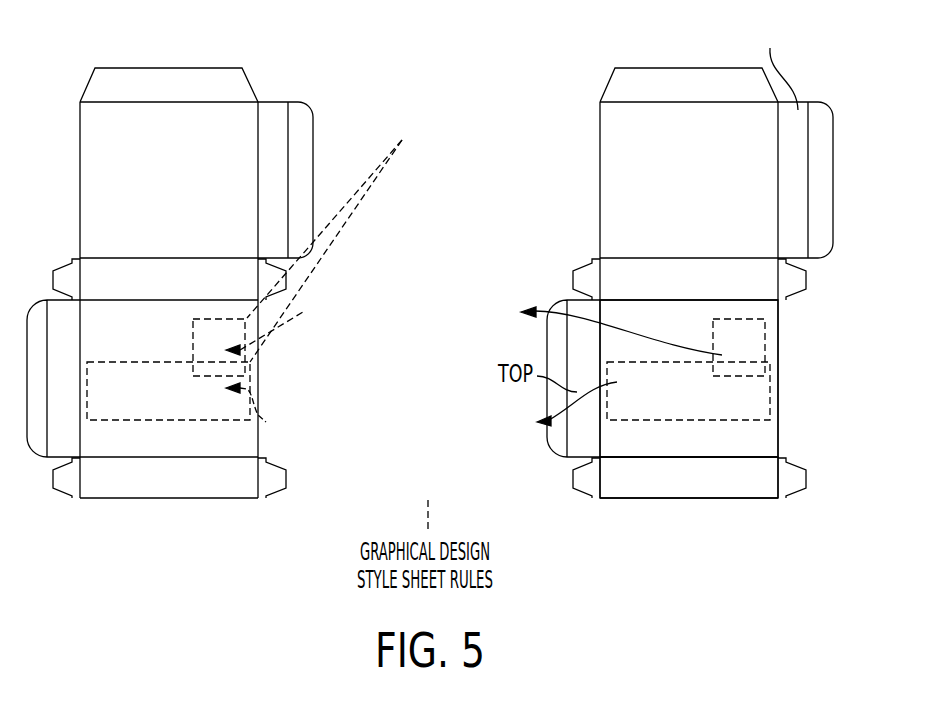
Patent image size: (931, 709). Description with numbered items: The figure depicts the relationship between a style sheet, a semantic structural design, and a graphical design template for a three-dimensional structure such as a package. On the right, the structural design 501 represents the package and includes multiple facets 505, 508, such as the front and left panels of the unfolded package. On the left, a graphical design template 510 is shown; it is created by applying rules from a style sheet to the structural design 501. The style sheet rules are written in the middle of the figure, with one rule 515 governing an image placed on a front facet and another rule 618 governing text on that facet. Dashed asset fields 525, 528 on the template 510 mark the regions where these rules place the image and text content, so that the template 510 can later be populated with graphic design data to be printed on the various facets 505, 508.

The structural design 501 is at (690, 328).
The facet 505 is at (763, 447).
The facet 508 is at (616, 494).
The graphical design template 510 is at (241, 353).
The rule 515 is at (432, 290).
The image asset field 525 is at (334, 223).
The text asset field 528 is at (368, 196).
The graphical design style sheet rule for text asset field 618 is at (487, 493).